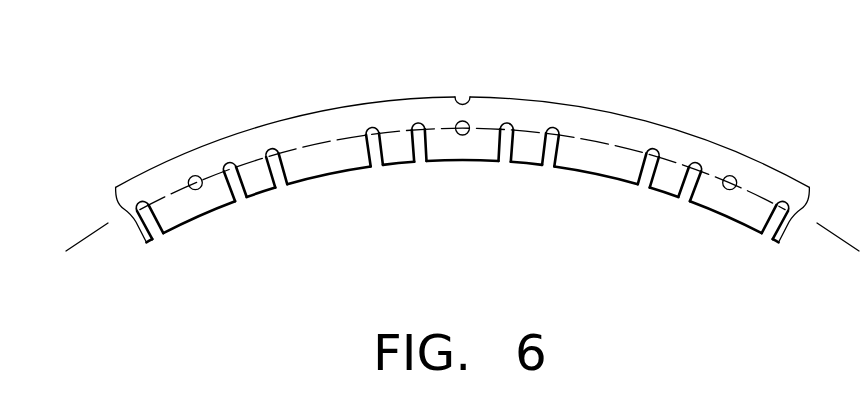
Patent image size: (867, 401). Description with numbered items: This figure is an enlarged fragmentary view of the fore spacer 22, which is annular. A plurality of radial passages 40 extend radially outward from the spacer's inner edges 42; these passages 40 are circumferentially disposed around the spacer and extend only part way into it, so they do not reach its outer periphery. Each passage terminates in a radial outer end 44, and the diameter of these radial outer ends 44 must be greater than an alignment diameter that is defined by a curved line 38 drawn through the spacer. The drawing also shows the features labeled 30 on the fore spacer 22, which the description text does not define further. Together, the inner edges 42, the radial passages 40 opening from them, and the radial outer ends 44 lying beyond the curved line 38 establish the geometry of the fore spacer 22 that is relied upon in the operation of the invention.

The fore spacer 22 is at (613, 112).
The hole 30 is at (735, 177).
The curved line 38 is at (322, 140).
The radial passages 40 is at (420, 141).
The inner edges 42 is at (616, 183).
The radial outer ends 44 is at (549, 141).